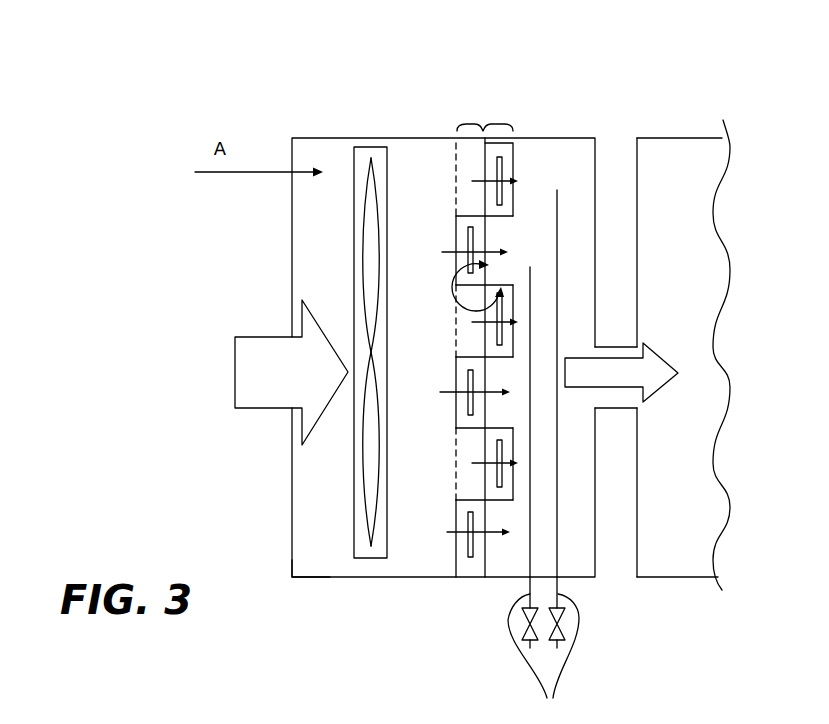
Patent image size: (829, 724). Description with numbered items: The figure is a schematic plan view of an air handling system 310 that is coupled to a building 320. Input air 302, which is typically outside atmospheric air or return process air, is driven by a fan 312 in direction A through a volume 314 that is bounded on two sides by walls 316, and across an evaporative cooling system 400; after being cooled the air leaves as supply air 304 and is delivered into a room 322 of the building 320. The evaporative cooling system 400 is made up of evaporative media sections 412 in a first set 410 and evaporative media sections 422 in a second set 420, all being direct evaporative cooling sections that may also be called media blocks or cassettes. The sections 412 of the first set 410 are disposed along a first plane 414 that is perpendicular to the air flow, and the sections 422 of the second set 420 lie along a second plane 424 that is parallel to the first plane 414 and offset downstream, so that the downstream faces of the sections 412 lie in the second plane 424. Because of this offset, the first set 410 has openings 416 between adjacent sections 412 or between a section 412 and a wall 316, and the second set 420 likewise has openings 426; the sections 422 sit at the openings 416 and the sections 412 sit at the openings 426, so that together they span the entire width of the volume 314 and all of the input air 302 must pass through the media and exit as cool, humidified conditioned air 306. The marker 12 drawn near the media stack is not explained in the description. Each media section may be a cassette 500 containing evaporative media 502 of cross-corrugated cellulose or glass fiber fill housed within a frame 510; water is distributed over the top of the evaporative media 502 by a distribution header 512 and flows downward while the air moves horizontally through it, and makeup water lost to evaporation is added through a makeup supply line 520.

The recirculation flow 12 is at (485, 283).
The input air 302 is at (247, 337).
The supply air 304 is at (660, 355).
The conditioned air 306 is at (474, 181).
The air handling system 310 is at (358, 108).
The fan 312 is at (362, 570).
The volume 314 is at (309, 568).
The walls 316 is at (588, 138).
The building 320 is at (660, 138).
The room 322 is at (660, 499).
The evaporative cooling system 400 is at (567, 58).
The first set 410 is at (470, 122).
The evaporative media sections 412 is at (464, 238).
The first plane 414 is at (457, 580).
The opening 416 is at (446, 138).
The second set 420 is at (497, 122).
The evaporative media sections 422 is at (506, 166).
The second plane 424 is at (485, 579).
The opening 426 is at (508, 228).
The cassette 500 is at (144, 717).
The evaporative media 502 is at (331, 723).
The frame 510 is at (470, 723).
The distribution header 512 is at (604, 723).
The makeup supply line 520 is at (543, 650).